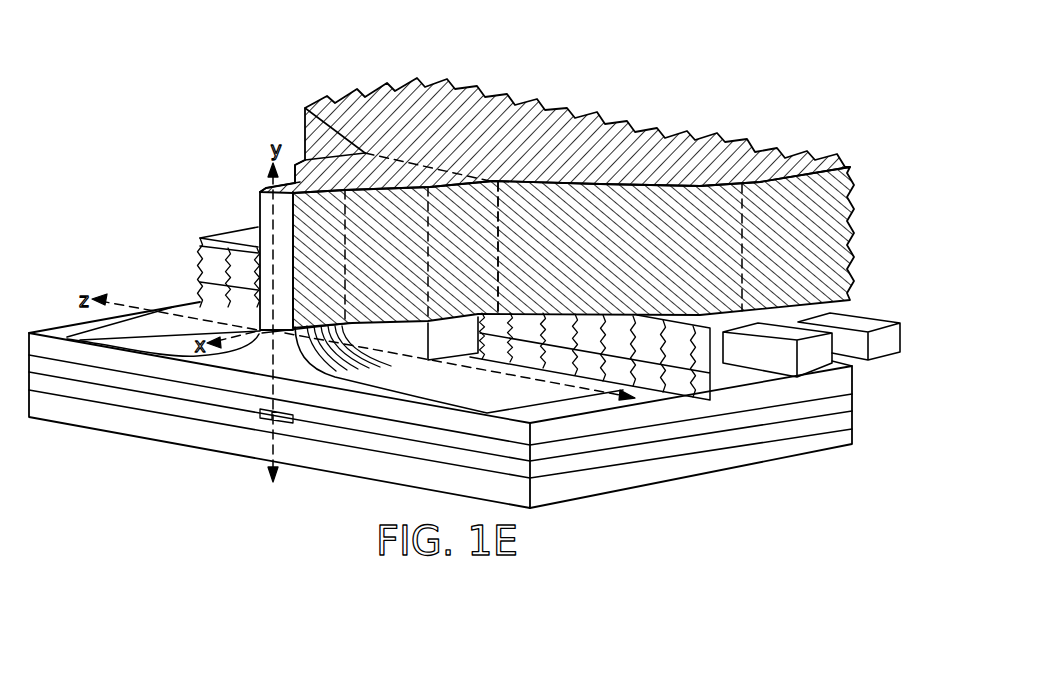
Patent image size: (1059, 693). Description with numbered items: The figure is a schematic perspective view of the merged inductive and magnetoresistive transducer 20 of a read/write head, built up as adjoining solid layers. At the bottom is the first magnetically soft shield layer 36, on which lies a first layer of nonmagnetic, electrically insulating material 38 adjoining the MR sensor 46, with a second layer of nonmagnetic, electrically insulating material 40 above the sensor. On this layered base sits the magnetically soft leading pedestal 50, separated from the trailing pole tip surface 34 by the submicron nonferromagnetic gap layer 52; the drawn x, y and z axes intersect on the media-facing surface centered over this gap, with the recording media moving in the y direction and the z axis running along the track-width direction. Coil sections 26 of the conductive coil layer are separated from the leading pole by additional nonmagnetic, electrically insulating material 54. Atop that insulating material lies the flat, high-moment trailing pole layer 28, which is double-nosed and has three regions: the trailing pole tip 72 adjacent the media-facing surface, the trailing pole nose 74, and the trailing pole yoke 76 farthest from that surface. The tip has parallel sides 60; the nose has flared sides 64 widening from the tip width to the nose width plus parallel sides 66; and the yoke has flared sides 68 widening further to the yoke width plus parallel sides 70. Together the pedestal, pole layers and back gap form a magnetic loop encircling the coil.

The transducer 20 is at (503, 50).
The coil sections 26 is at (883, 338).
The trailing pole layer 28 is at (694, 141).
The trailing pole tip surface 34 is at (262, 210).
The first shield layer 36 is at (857, 431).
The first layer of nonmagnetic, electrically insulating material 38 is at (857, 410).
The second layer of nonmagnetic, electrically insulating material 40 is at (857, 392).
The MR sensor 46 is at (270, 419).
The leading pedestal 50 is at (257, 360).
The submicron nonferromagnetic gap layer 52 is at (418, 323).
The nonmagnetic, electrically insulating material 54 is at (205, 270).
The sides of trailing pole tip 60 is at (306, 274).
The flared sides of trailing pole nose 64 is at (371, 264).
The parallel sides of trailing pole nose 66 is at (451, 259).
The flared sides of trailing pole yoke 68 is at (310, 152).
The parallel sides of trailing pole yoke 70 is at (784, 249).
The trailing pole tip 72 is at (267, 188).
The trailing pole nose 74 is at (299, 161).
The trailing pole yoke 76 is at (334, 107).